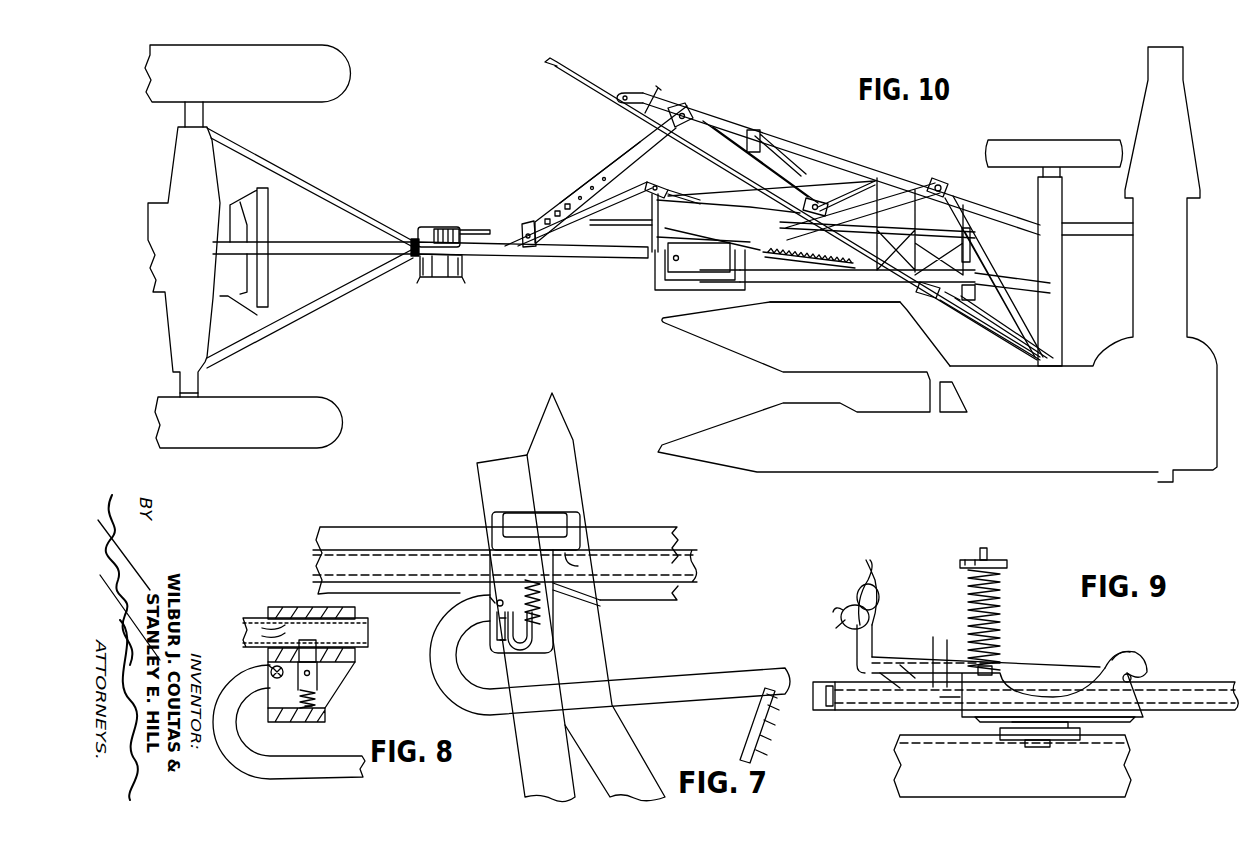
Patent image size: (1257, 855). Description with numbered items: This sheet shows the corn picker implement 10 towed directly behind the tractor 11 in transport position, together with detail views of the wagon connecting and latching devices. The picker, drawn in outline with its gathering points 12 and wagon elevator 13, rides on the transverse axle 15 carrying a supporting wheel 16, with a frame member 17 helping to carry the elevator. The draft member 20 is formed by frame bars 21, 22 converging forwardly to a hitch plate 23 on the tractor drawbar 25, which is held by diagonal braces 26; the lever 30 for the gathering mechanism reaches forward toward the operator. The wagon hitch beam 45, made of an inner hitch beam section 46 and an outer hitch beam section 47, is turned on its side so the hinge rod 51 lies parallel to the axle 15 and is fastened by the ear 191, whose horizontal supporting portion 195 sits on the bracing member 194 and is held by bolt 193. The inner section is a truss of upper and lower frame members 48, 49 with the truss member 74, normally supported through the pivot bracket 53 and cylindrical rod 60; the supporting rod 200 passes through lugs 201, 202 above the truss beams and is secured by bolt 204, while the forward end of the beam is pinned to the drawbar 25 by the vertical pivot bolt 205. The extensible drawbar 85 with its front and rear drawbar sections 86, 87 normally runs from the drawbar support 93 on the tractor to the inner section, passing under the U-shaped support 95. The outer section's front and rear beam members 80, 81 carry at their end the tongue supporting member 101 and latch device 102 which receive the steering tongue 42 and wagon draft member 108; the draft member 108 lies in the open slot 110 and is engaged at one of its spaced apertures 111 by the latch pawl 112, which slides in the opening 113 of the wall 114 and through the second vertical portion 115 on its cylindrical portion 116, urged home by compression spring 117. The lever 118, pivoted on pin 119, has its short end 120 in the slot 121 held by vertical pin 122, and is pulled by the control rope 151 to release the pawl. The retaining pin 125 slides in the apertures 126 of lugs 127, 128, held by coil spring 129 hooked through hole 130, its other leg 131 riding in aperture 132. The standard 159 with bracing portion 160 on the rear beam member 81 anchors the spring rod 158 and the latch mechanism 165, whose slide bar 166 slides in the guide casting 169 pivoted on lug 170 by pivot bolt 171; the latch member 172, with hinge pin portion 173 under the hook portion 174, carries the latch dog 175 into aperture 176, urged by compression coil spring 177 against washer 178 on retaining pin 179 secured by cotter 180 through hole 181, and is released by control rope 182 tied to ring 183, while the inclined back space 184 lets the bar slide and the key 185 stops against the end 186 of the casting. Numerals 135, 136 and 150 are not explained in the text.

In FIG. 10, the corn picker implement 10 is at (682, 263).
In FIG. 10, the tractor 11 is at (181, 254).
In FIG. 10, the gathering points 12 is at (737, 430).
In FIG. 10, the wagon elevator 13 is at (1175, 63).
In FIG. 10, the transverse axle 15 is at (1062, 292).
In FIG. 10, the supporting wheel 16 is at (1033, 147).
In FIG. 10, the frame member 17 is at (1095, 230).
In FIG. 10, the draft member 20 is at (841, 164).
In FIG. 10, the frame bar 21 is at (828, 158).
In FIG. 10, the frame bar 22 is at (768, 176).
In FIG. 10, the hitch plate 23 is at (630, 93).
In FIG. 10, the drawbar 25 is at (318, 242).
In FIG. 10, the diagonal braces 26 is at (325, 198).
In FIG. 10, the lever 30 is at (588, 73).
In FIG. 7, the steering tongue 42 is at (423, 527).
In FIG. 10, the wagon hitch beam 45 is at (657, 263).
In FIG. 10, the inner hitch beam section 46 is at (754, 304).
In FIG. 10, the outer hitch beam section 47 is at (556, 266).
In FIG. 10, the upper frame member 48 is at (867, 218).
In FIG. 9, the upper frame member 48 is at (950, 778).
In FIG. 10, the lower frame member 49 is at (796, 276).
In FIG. 10, the hinge rod 51 is at (961, 243).
In FIG. 10, the pivot bracket 53 is at (949, 189).
In FIG. 10, the cylindrical rod 60 is at (975, 262).
In FIG. 10, the truss member 74 is at (826, 276).
In FIG. 7, the front beam member 80 is at (480, 472).
In FIG. 7, the rear beam member 81 is at (565, 455).
In FIG. 10, the extensible drawbar 85 is at (567, 178).
In FIG. 10, the front drawbar section 86 is at (513, 222).
In FIG. 10, the rear drawbar section 87 is at (612, 163).
In FIG. 10, the drawbar support 93 is at (265, 280).
In FIG. 10, the U-shaped support 95 is at (655, 290).
In FIG. 10, the tongue supporting member 101 is at (476, 274).
In FIG. 10, the latch device 102 is at (432, 227).
In FIG. 7, the latch device 102 is at (580, 530).
In FIG. 7, the wagon draft member 108 is at (683, 560).
In FIG. 8, the wagon draft member 108 is at (362, 636).
In FIG. 7, the open slot 110 is at (578, 565).
In FIG. 8, the open slot 110 is at (262, 626).
In FIG. 8, the spaced apertures 111 is at (262, 636).
In FIG. 8, the latch pawl 112 is at (300, 610).
In FIG. 8, the opening 113 is at (312, 642).
In FIG. 8, the wall 114 is at (357, 655).
In FIG. 8, the second vertical portion 115 is at (280, 722).
In FIG. 8, the cylindrical portion 116 is at (315, 707).
In FIG. 8, the compression spring 117 is at (317, 697).
In FIG. 10, the lever 118 is at (490, 230).
In FIG. 7, the lever 118 is at (442, 625).
In FIG. 8, the lever 118 is at (240, 764).
In FIG. 7, the pin 119 is at (490, 601).
In FIG. 8, the pin 119 is at (268, 668).
In FIG. 8, the short end of lever 120 is at (290, 683).
In FIG. 8, the slot 121 is at (325, 667).
In FIG. 8, the vertical pin 122 is at (325, 670).
In FIG. 10, the retaining pin 125 is at (455, 228).
In FIG. 7, the retaining pin 125 is at (532, 568).
In FIG. 7, the apertures 126 is at (553, 608).
In FIG. 7, the lug 127 is at (497, 645).
In FIG. 7, the lug 128 is at (575, 585).
In FIG. 7, the coil spring 129 is at (497, 602).
In FIG. 7, the hole 130 is at (521, 601).
In FIG. 7, the other leg 131 is at (497, 627).
In FIG. 7, the aperture 132 is at (515, 650).
In FIG. 10, the clamp 135 is at (462, 275).
In FIG. 10, the clamp 136 is at (418, 268).
In FIG. 10, the clamp bracket 150 is at (441, 280).
In FIG. 7, the control rope 151 is at (744, 738).
In FIG. 10, the rod 158 is at (687, 232).
In FIG. 10, the standard 159 is at (658, 198).
In FIG. 10, the bracing portion 160 is at (617, 198).
In FIG. 9, the latch mechanism 165 is at (1012, 646).
In FIG. 10, the slide bar 166 is at (692, 200).
In FIG. 9, the slide bar 166 is at (1177, 683).
In FIG. 9, the guide casting 169 is at (1138, 720).
In FIG. 9, the lug 170 is at (1074, 740).
In FIG. 9, the pivot bolt 171 is at (1040, 747).
In FIG. 10, the latch member 172 is at (743, 207).
In FIG. 9, the latch member 172 is at (1035, 660).
In FIG. 9, the hinge pin portion 173 is at (1132, 672).
In FIG. 9, the hook portion 174 is at (1120, 656).
In FIG. 9, the latch dog 175 is at (912, 675).
In FIG. 9, the aperture 176 is at (942, 657).
In FIG. 9, the compression coil spring 177 is at (968, 590).
In FIG. 9, the washer 178 is at (1003, 560).
In FIG. 9, the retaining pin 179 is at (982, 548).
In FIG. 9, the cotter 180 is at (972, 560).
In FIG. 9, the hole 181 is at (990, 666).
In FIG. 9, the control rope 182 is at (865, 580).
In FIG. 9, the ring 183 is at (870, 655).
In FIG. 9, the back space of latch dog 184 is at (893, 678).
In FIG. 9, the key 185 is at (828, 690).
In FIG. 9, the end of guide casting 186 is at (960, 698).
In FIG. 10, the ear 191 is at (940, 298).
In FIG. 10, the bolt 193 is at (962, 313).
In FIG. 10, the bracing member 194 is at (1012, 281).
In FIG. 10, the horizontal supporting portion 195 is at (985, 318).
In FIG. 10, the supporting rod 200 is at (872, 268).
In FIG. 10, the lug 201 is at (814, 198).
In FIG. 10, the lug 202 is at (932, 290).
In FIG. 10, the securing bolt 204 is at (950, 308).
In FIG. 10, the vertical pivot bolt 205 is at (414, 240).